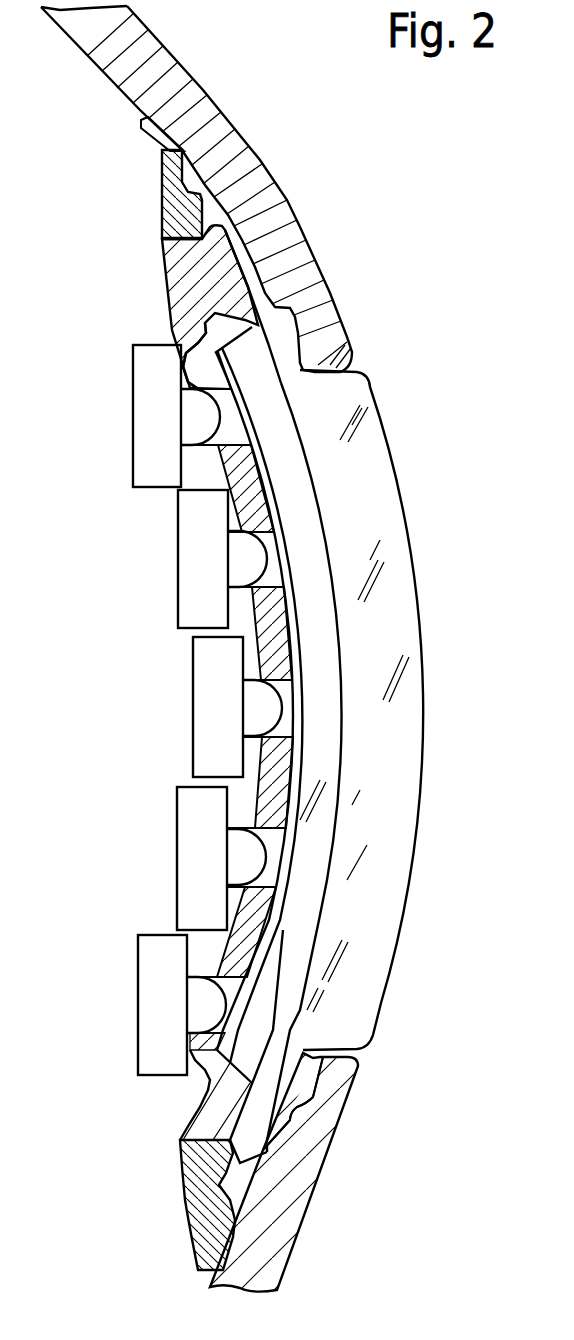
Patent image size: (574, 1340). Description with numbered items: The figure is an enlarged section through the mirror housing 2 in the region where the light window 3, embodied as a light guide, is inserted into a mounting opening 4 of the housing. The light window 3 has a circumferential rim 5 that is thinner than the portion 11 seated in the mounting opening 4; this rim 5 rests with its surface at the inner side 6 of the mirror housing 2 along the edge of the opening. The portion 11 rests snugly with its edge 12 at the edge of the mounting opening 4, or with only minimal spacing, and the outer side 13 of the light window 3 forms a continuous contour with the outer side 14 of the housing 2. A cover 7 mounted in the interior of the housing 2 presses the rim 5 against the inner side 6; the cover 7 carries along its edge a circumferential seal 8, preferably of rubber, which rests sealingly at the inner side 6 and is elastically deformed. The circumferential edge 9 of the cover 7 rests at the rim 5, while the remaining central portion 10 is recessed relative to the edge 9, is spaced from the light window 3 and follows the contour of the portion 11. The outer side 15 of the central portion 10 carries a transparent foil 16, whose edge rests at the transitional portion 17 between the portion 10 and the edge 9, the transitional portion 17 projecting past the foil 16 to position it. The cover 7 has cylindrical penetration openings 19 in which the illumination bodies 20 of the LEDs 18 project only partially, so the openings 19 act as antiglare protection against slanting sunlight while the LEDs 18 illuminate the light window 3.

The mirror housing 2 is at (200, 128).
The light window 3 is at (336, 428).
The mounting opening 4 is at (343, 372).
The circumferential rim 5 is at (242, 272).
The inner side 6 is at (85, 65).
The cover 7 is at (192, 295).
The circumferential seal 8 is at (175, 200).
The circumferential edge 9 is at (195, 258).
The remaining portion 10 is at (235, 498).
The portion 11 is at (383, 590).
The edge 12 is at (323, 1048).
The outer side 13 is at (466, 832).
The outer side 14 is at (262, 165).
The outer side 15 is at (277, 792).
The foil 16 is at (268, 542).
The transitional portion 17 is at (205, 346).
The LEDs 18 is at (157, 438).
The penetration openings 19 is at (232, 428).
The illumination bodies 20 is at (250, 862).